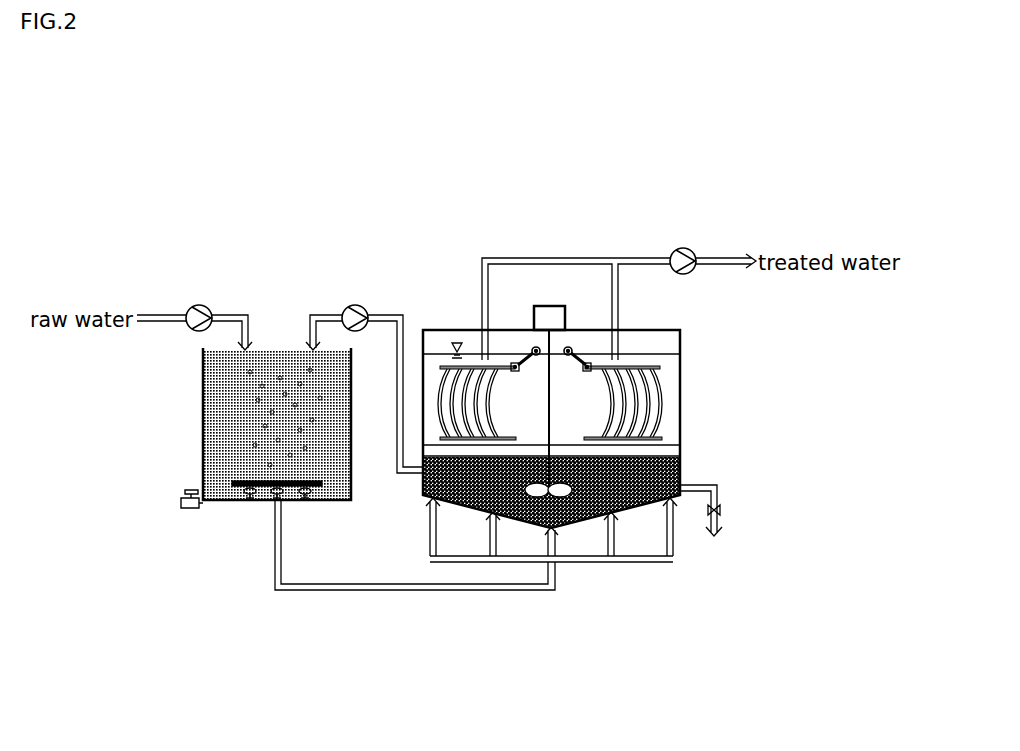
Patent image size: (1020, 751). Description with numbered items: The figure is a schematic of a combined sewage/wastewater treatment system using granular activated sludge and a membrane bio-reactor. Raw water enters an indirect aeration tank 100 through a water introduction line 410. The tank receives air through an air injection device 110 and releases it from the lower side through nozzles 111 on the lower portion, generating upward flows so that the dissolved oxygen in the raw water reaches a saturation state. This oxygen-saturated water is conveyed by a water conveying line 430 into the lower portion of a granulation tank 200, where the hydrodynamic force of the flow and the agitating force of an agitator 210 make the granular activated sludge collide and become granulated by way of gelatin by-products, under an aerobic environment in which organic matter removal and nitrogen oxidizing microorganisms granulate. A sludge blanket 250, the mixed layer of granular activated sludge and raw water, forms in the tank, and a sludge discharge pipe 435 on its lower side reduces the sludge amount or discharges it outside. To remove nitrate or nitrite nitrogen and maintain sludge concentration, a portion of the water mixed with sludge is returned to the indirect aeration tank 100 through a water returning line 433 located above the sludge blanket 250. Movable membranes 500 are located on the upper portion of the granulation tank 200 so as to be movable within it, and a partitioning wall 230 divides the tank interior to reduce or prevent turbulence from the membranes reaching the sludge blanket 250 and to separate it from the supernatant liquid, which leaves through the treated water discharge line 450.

The indirect aeration tank 100 is at (192, 430).
The air injection device 110 is at (190, 511).
The nozzles 111 is at (307, 502).
The granulation tank 200 is at (692, 366).
The agitator 210 is at (550, 305).
The partitioning wall 230 is at (673, 450).
The sludge blanket 250 is at (673, 473).
The water introduction line 410 is at (229, 313).
The water conveying line 430 is at (412, 593).
The water returning line 433 is at (388, 313).
The sludge discharge pipe 435 is at (707, 525).
The treated water discharge line 450 is at (728, 258).
The movable membranes 500 is at (665, 407).